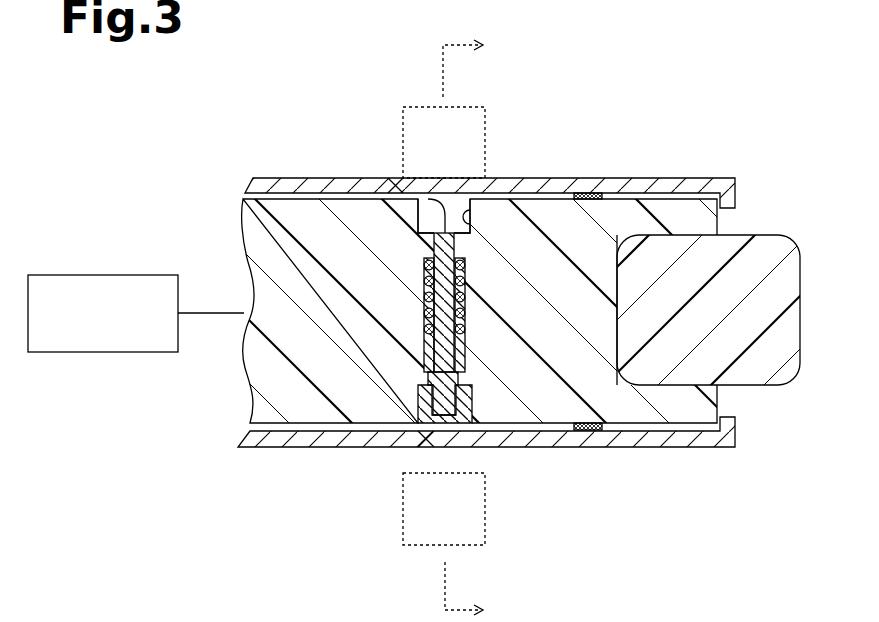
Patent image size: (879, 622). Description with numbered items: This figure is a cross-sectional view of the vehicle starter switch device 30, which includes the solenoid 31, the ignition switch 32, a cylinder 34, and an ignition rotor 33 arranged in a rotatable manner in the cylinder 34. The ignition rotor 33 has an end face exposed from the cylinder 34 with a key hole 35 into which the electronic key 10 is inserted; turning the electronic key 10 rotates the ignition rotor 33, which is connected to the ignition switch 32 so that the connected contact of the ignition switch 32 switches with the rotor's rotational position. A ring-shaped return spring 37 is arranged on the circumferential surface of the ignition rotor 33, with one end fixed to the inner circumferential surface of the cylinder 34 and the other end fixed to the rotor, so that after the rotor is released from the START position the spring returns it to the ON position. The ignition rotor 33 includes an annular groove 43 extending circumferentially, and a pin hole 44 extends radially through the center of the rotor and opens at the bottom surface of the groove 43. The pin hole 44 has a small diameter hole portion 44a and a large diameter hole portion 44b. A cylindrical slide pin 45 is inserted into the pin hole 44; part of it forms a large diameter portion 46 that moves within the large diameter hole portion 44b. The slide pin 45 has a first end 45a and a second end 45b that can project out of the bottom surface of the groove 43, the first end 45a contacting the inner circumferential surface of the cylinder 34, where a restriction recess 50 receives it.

The electronic key 10 is at (757, 388).
The vehicle starter switch device 30 is at (439, 331).
The solenoid 31 is at (486, 532).
The ignition switch 32 is at (108, 274).
The ignition rotor 33 is at (673, 208).
The cylinder 34 is at (632, 178).
The key hole 35 is at (716, 244).
The return spring 37 is at (560, 447).
The annular groove 43 is at (472, 218).
The pin hole 44 is at (497, 285).
The small diameter hole portion 44a is at (462, 236).
The large diameter hole portion 44b is at (462, 262).
The slide pin 45 is at (458, 306).
The first end 45a is at (428, 440).
The second end 45b is at (408, 192).
The large diameter portion 46 is at (462, 352).
The restriction recess 50 is at (476, 423).